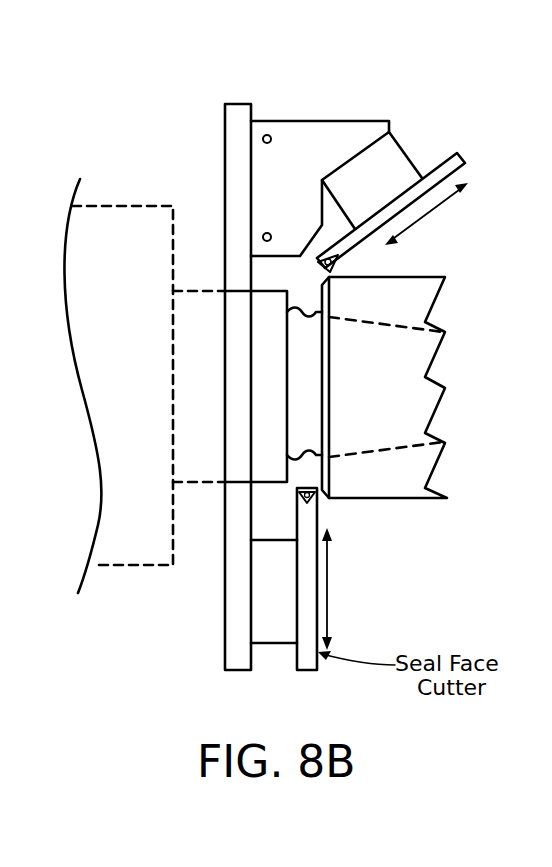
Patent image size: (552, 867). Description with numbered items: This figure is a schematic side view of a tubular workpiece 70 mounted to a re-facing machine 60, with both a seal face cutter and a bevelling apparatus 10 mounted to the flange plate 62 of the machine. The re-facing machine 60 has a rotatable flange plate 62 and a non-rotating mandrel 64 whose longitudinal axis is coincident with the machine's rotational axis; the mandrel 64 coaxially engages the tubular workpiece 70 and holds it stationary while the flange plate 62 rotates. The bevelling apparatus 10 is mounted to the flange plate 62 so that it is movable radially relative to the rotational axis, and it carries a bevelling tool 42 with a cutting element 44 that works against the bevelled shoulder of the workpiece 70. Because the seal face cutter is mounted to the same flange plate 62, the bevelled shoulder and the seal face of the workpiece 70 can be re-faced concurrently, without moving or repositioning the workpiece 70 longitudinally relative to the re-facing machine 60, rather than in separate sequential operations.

The bevelling apparatus 10 is at (356, 102).
The bevelling tool 42 is at (467, 158).
The cutting element 44 is at (345, 269).
The re-facing machine 60 is at (134, 206).
The flange plate 62 is at (225, 138).
The mandrel 64 is at (308, 306).
The tubular workpiece 70 is at (413, 498).